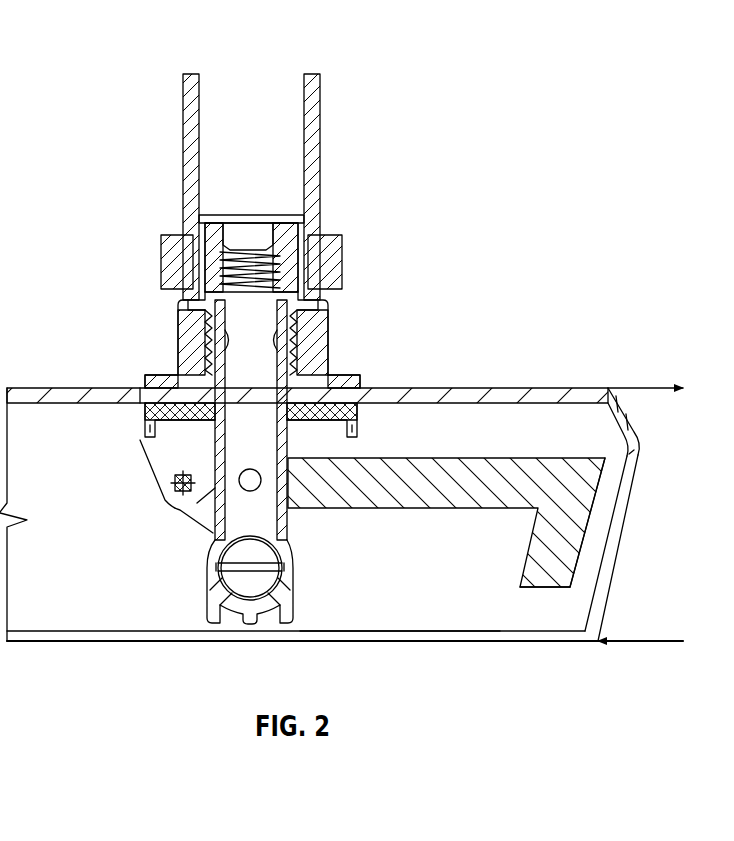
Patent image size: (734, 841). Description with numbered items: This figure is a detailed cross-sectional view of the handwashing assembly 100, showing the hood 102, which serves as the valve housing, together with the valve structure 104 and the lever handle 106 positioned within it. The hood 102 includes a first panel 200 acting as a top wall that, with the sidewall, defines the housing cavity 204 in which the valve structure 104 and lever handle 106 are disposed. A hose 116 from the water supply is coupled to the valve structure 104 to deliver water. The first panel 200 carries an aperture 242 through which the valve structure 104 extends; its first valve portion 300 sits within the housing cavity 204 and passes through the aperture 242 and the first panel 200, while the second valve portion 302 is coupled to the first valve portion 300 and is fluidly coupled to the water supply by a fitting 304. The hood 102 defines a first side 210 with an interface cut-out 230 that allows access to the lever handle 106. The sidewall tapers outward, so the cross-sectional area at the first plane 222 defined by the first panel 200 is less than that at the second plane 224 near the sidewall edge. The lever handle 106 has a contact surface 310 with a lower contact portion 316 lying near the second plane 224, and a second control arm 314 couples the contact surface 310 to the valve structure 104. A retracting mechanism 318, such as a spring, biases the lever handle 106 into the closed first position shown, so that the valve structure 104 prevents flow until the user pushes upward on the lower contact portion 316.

The handwashing assembly 100 is at (590, 245).
The hood 102 is at (80, 330).
The valve structure 104 is at (140, 425).
The lever handle 106 is at (515, 600).
The hose 116 is at (312, 155).
The first panel 200 is at (510, 388).
The housing cavity 204 is at (142, 600).
The first side 210 is at (642, 445).
The first plane 222 is at (648, 388).
The second plane 224 is at (632, 640).
The interface cut-out 230 is at (636, 520).
The aperture 242 is at (355, 388).
The first valve portion 300 is at (362, 414).
The second valve portion 302 is at (330, 318).
The fitting 304 is at (342, 262).
The contact surface 310 is at (590, 530).
The second control arm 314 is at (390, 498).
The lower contact portion 316 is at (560, 590).
The retracting mechanism 318 is at (300, 240).